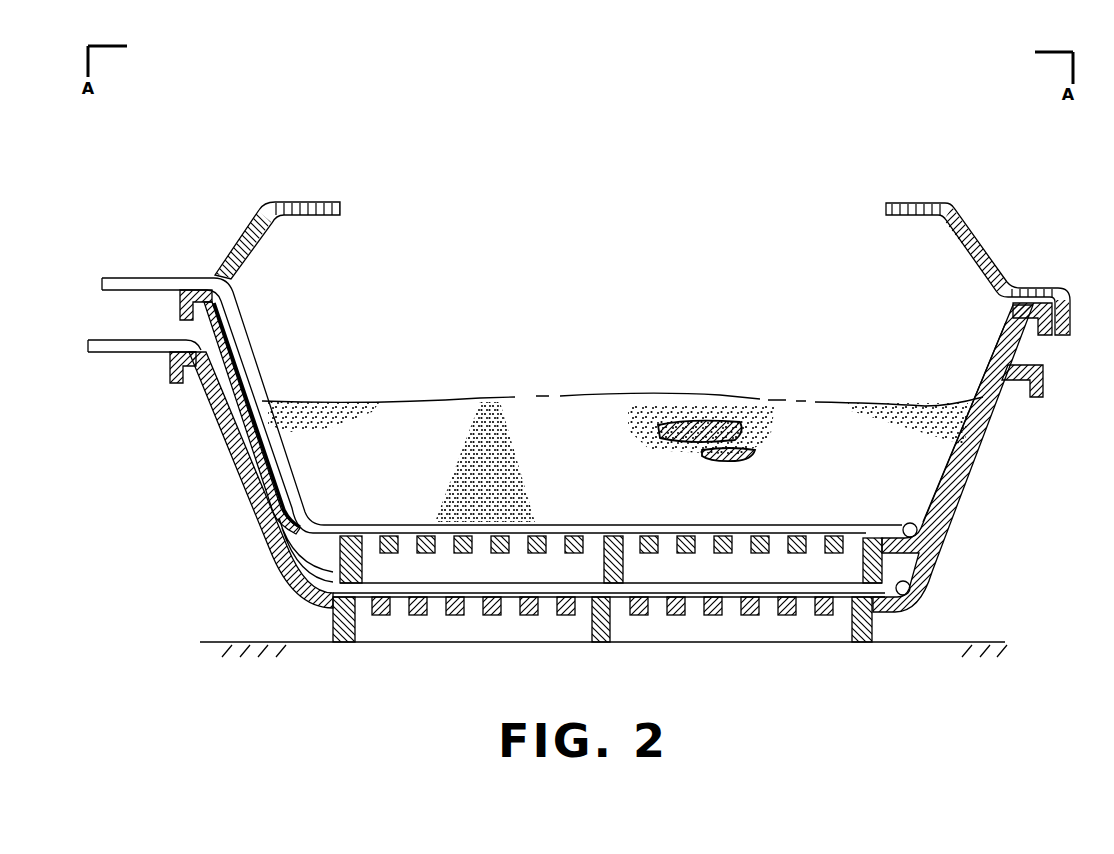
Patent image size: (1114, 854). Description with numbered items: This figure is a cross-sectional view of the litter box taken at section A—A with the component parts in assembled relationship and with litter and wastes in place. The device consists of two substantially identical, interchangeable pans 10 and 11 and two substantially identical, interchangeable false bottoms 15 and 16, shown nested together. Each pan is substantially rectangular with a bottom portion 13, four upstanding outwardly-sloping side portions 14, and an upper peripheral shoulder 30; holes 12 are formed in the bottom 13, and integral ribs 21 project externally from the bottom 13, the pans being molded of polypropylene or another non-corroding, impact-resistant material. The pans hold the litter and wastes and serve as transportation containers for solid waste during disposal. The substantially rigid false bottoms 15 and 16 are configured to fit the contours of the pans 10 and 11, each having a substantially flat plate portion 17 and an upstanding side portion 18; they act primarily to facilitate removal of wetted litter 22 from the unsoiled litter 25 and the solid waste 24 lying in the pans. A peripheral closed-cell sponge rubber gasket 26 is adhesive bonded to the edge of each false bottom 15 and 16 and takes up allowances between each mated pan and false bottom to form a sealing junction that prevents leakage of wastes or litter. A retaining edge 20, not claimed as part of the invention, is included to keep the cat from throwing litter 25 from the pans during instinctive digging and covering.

The pan 10 is at (178, 301).
The pan 11 is at (217, 432).
The holes 12 is at (548, 540).
The bottom portion 13 is at (317, 592).
The side portions 14 is at (1000, 357).
The false bottom 15 is at (146, 278).
The false bottom 16 is at (92, 340).
The flat plate portion 17 is at (716, 528).
The upstanding side portion 18 is at (267, 397).
The retaining edge 20 is at (322, 203).
The integral ribs 21 is at (362, 545).
The wetted litter 22 is at (505, 410).
The solid waste 24 is at (712, 420).
The litter 25 is at (372, 400).
The gasket 26 is at (906, 526).
The upper peripheral shoulder 30 is at (1022, 302).